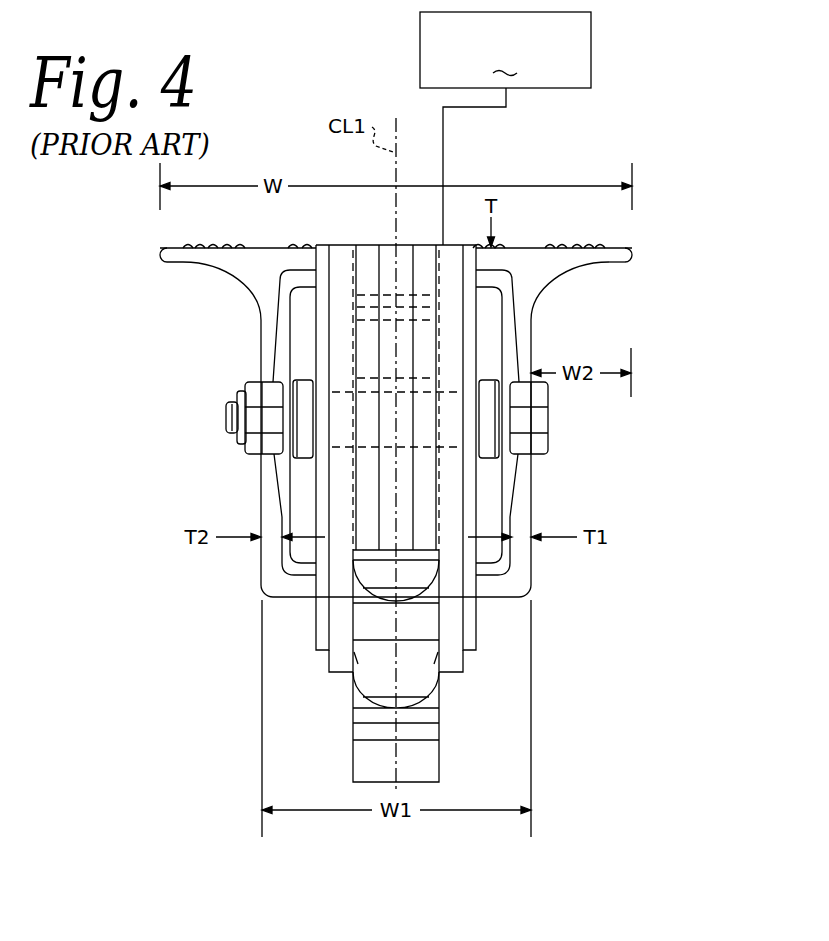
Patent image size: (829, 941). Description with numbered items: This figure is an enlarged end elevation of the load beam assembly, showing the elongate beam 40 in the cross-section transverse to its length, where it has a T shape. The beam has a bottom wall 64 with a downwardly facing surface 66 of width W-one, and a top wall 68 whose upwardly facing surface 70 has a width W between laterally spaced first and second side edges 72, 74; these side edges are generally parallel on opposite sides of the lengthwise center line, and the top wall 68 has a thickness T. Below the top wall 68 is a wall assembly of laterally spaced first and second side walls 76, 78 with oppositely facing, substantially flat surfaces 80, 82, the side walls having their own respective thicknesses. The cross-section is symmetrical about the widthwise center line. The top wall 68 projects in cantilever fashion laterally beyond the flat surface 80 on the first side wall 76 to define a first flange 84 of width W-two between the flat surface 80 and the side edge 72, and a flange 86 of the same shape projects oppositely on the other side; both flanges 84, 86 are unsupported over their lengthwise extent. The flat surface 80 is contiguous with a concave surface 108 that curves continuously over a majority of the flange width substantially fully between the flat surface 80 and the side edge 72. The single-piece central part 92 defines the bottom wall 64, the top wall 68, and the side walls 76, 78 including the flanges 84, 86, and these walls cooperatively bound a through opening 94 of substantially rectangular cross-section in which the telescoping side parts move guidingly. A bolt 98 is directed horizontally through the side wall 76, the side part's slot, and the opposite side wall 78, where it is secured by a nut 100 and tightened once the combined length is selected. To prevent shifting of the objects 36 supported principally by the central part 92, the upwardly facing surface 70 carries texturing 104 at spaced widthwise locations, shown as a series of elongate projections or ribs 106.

The object 36 is at (505, 128).
The elongate beam 40 is at (256, 590).
The bottom wall 64 is at (500, 600).
The downwardly facing surface 66 is at (293, 600).
The top wall 68 is at (523, 247).
The upwardly facing surface 70 is at (272, 247).
The first side edge 72 is at (633, 256).
The second side edge 74 is at (160, 256).
The first side wall 76 is at (532, 348).
The second side wall 78 is at (260, 352).
The flat surface 80 is at (531, 511).
The flat surface 82 is at (261, 496).
The first flange 84 is at (587, 267).
The flange 86 is at (212, 268).
The central part 92 is at (262, 472).
The through opening 94 is at (280, 553).
The bolt 98 is at (540, 418).
The nut 100 is at (243, 385).
The texturing 104 is at (214, 240).
The elongate projections/ribs 106 is at (188, 247).
The concave surface 108 is at (553, 283).